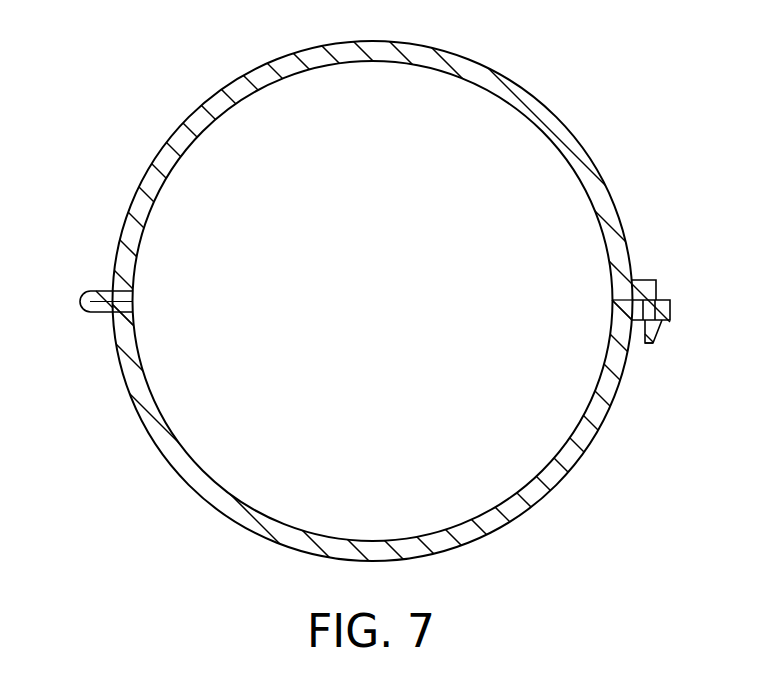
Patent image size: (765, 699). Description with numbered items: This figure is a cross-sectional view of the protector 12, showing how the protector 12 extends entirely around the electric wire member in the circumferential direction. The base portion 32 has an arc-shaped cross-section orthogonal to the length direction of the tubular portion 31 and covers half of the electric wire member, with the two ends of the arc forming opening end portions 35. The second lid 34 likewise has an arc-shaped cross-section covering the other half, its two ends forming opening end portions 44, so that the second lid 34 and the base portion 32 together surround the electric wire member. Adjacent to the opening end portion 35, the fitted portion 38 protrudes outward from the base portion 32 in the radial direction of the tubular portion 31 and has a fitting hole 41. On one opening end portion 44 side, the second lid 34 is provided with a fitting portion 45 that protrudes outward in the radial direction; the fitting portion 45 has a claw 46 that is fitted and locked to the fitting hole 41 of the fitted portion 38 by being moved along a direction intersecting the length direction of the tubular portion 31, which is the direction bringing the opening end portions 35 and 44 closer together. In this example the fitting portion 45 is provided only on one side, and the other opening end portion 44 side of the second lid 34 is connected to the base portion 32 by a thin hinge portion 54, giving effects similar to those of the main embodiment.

The protector 12 is at (382, 349).
The tubular portion 31 is at (592, 152).
The base portion 32 is at (572, 473).
The second lid 34 is at (203, 102).
The opening end portion 35 is at (135, 292).
The fitted portion 38 is at (680, 324).
The fitting hole 41 is at (657, 294).
The opening end portion 44 is at (133, 314).
The fitting portion 45 is at (649, 344).
The claw 46 is at (667, 326).
The thin hinge portion 54 is at (78, 297).